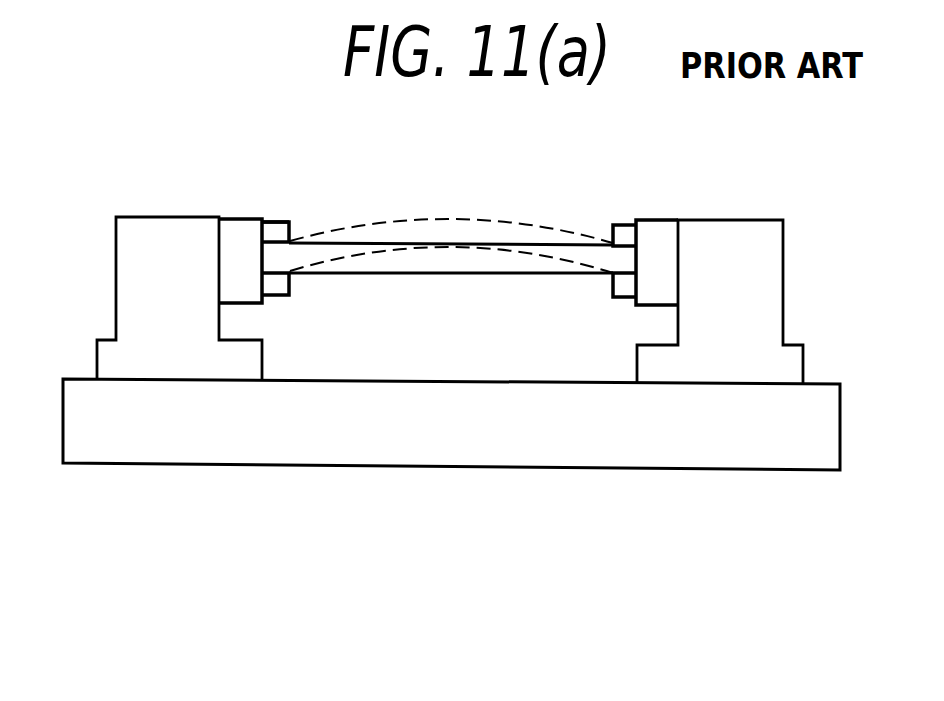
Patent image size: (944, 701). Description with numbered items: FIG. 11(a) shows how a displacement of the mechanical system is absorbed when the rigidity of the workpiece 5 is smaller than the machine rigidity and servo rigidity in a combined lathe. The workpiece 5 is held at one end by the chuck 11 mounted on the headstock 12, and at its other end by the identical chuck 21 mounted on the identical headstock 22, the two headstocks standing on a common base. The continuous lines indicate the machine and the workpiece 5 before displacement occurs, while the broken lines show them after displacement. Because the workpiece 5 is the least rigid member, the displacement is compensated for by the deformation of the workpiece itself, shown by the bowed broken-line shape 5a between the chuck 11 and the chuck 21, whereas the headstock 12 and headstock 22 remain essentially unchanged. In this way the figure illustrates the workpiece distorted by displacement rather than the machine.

The headstock 12 is at (165, 217).
The chuck 11 is at (244, 219).
The chuck 21 is at (657, 220).
The headstock 22 is at (748, 220).
The workpiece 5 is at (462, 274).
The deflected beam 5a is at (437, 219).